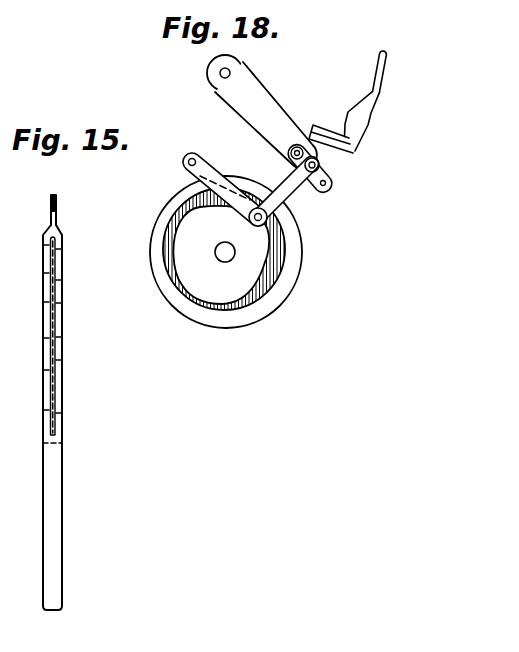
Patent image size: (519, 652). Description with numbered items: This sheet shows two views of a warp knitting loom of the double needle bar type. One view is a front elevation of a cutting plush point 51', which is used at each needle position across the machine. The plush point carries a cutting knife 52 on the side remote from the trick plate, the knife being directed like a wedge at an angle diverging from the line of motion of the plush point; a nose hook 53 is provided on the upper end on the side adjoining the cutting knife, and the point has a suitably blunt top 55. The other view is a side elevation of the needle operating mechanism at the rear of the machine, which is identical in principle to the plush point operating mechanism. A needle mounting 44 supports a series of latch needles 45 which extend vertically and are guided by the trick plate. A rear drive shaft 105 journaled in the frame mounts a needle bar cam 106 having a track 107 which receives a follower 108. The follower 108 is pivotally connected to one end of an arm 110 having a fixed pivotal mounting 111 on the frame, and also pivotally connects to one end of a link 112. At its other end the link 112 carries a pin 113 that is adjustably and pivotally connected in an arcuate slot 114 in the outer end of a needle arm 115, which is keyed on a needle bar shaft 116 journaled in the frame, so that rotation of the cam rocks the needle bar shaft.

In FIG. 18, the needle mounting 44 is at (372, 111).
In FIG. 18, the latch needle 45 is at (381, 78).
In FIG. 15, the cutting plush point 51' is at (75, 402).
In FIG. 15, the cutting knife 52 is at (49, 393).
In FIG. 15, the nose hook 53 is at (50, 198).
In FIG. 15, the blunt top 55 is at (56, 195).
In FIG. 18, the rear drive shaft 105 is at (225, 252).
In FIG. 18, the needle bar cam 106 is at (277, 290).
In FIG. 18, the track 107 is at (173, 277).
In FIG. 18, the follower 108 is at (267, 217).
In FIG. 18, the arm 110 is at (215, 171).
In FIG. 18, the fixed pivotal mounting 111 is at (192, 152).
In FIG. 18, the link 112 is at (287, 186).
In FIG. 18, the pin 113 is at (320, 164).
In FIG. 18, the arcuate slot 114 is at (331, 185).
In FIG. 18, the needle arm 115 is at (255, 93).
In FIG. 18, the needle bar shaft 116 is at (236, 67).